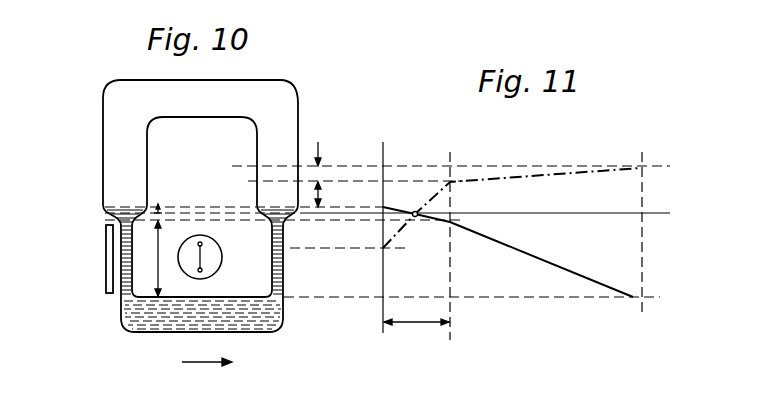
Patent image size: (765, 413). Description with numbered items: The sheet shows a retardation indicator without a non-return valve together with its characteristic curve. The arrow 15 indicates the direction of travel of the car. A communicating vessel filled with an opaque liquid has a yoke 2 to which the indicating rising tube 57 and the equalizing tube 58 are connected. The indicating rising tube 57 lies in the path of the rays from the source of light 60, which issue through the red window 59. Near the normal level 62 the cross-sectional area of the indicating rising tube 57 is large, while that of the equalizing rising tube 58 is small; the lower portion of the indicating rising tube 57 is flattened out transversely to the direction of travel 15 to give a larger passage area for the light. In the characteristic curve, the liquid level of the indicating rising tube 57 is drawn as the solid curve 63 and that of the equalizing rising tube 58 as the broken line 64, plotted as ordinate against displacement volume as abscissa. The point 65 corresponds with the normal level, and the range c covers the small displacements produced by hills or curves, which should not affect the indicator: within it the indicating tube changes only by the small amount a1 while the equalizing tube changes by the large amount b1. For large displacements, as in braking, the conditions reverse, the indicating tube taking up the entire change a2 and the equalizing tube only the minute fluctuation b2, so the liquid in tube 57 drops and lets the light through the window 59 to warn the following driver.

In FIG. 10, the yoke 2 is at (167, 320).
In FIG. 10, the arrow 15 is at (207, 362).
In FIG. 10, the indicating rising tube 57 is at (122, 273).
In FIG. 10, the equalizing tube 58 is at (283, 272).
In FIG. 10, the window 59 is at (106, 247).
In FIG. 10, the source of light 60 is at (215, 257).
In FIG. 10, the normal level 62 is at (121, 213).
In FIG. 11, the solid curve 63 is at (573, 276).
In FIG. 11, the broken line 64 is at (563, 174).
In FIG. 11, the point 65 is at (414, 212).
In FIG. 10, the small change of level a1 is at (166, 212).
In FIG. 10, the distance a2 is at (149, 258).
In FIG. 11, the large change of level b1 is at (321, 200).
In FIG. 11, the distance b2 is at (319, 168).
In FIG. 11, the range c is at (416, 322).